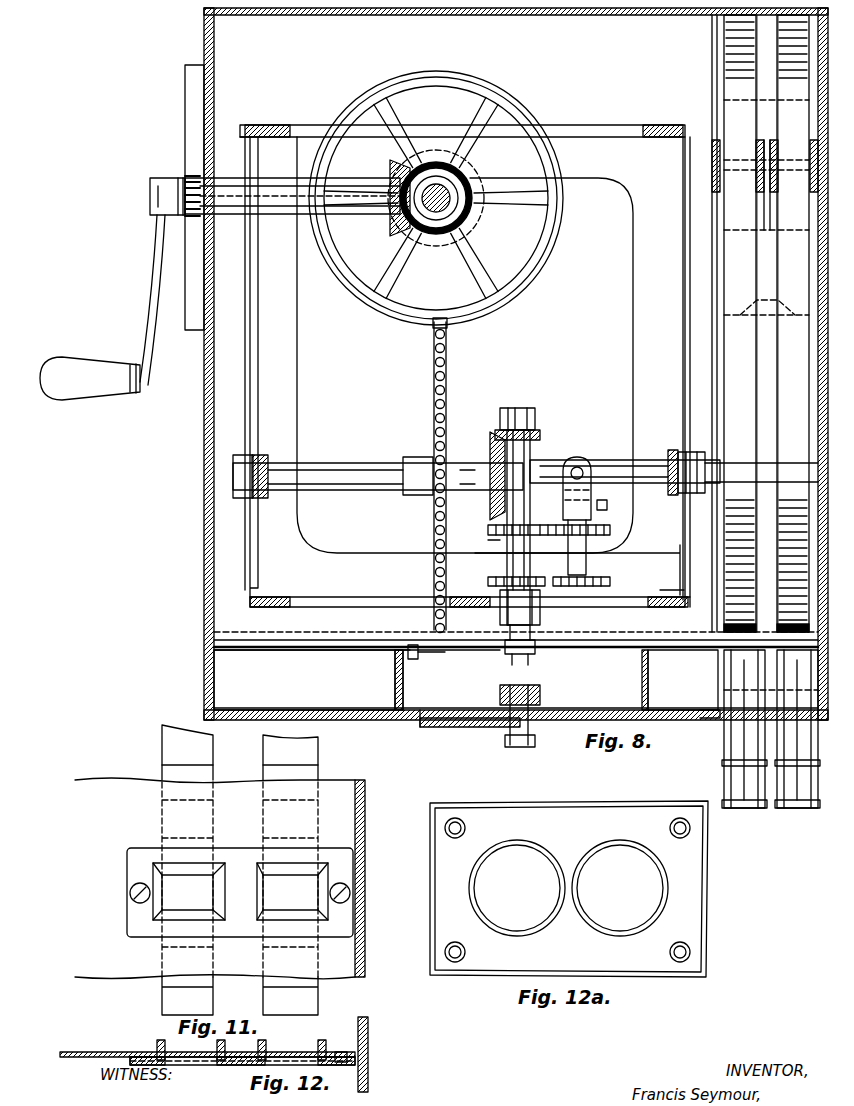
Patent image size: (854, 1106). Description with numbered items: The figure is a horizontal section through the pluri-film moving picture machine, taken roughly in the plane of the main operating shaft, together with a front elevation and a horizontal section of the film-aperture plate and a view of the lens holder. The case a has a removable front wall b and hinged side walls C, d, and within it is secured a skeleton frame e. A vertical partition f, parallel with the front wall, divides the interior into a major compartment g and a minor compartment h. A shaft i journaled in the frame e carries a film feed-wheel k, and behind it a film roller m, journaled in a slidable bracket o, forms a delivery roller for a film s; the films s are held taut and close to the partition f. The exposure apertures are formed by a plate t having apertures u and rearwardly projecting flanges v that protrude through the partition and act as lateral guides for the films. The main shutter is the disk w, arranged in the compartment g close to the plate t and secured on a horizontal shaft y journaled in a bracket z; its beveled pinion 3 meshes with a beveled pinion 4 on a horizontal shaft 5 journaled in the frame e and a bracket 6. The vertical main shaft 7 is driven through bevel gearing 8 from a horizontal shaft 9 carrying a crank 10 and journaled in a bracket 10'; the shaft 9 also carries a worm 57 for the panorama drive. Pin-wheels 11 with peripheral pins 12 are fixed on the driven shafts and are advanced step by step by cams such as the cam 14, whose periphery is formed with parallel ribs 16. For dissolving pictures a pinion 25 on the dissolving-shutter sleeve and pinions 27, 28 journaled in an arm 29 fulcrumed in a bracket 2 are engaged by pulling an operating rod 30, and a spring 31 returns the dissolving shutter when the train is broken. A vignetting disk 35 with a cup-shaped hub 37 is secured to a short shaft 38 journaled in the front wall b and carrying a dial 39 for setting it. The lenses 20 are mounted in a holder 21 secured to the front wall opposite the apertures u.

In FIG. 8, the case a is at (205, 688).
In FIG. 11, the case a is at (365, 832).
In FIG. 12, the case a is at (368, 1040).
In FIG. 8, the removable front wall b is at (360, 712).
In FIG. 8, the hinged side wall C is at (205, 487).
In FIG. 8, the skeleton frame e is at (290, 380).
In FIG. 8, the minor compartment h is at (465, 345).
In FIG. 8, the horizontal shaft 9 is at (152, 197).
In FIG. 8, the worm 57 is at (186, 222).
In FIG. 8, the crank 10 is at (102, 307).
In FIG. 8, the bracket 10' is at (292, 216).
In FIG. 8, the bevel gearing 8 is at (403, 170).
In FIG. 8, the cam 14 is at (378, 310).
In FIG. 8, the vertical shaft (main shaft) 7 is at (458, 190).
In FIG. 8, the pin-wheel 11 is at (447, 388).
In FIG. 8, the peripheral pin 12 is at (434, 418).
In FIG. 8, the horizontal shaft 5 is at (355, 472).
In FIG. 8, the bracket 6 is at (433, 526).
In FIG. 8, the beveled pinion 3 is at (532, 434).
In FIG. 8, the beveled pinion 4 is at (490, 437).
In FIG. 8, the rib 16 is at (538, 522).
In FIG. 8, the horizontal shaft y is at (484, 540).
In FIG. 8, the pinion 25 is at (506, 572).
In FIG. 8, the pinion 27 is at (611, 580).
In FIG. 8, the arm 29 is at (563, 500).
In FIG. 8, the pinion 28 is at (603, 512).
In FIG. 8, the operating rod 30 is at (640, 553).
In FIG. 8, the bracket z is at (541, 620).
In FIG. 8, the bracket 2 is at (600, 460).
In FIG. 8, the shaft i is at (645, 456).
In FIG. 8, the hinged side wall d is at (818, 407).
In FIG. 8, the bracket o is at (763, 195).
In FIG. 8, the film roller (delivery roller) m is at (775, 232).
In FIG. 8, the film feed-wheel k is at (767, 299).
In FIG. 8, the film s is at (766, 321).
In FIG. 11, the film s is at (262, 995).
In FIG. 8, the flange v is at (772, 628).
In FIG. 12, the flange v is at (326, 1048).
In FIG. 8, the vertical partition f is at (333, 634).
In FIG. 11, the vertical partition f is at (120, 978).
In FIG. 12, the vertical partition f is at (108, 1053).
In FIG. 8, the vignetting disk 35 is at (310, 650).
In FIG. 8, the major compartment g is at (304, 680).
In FIG. 8, the cup-shaped hub 37 is at (395, 680).
In FIG. 8, the spring 31 is at (416, 660).
In FIG. 8, the dial 39 is at (455, 727).
In FIG. 8, the short shaft 38 is at (540, 697).
In FIG. 8, the disk (main shutter) w is at (690, 647).
In FIG. 8, the lens 20 is at (764, 808).
In FIG. 8, the lens holder 21 is at (718, 720).
In FIG. 12A, the lens holder 21 is at (569, 889).
In FIG. 11, the plate t is at (240, 892).
In FIG. 12, the plate t is at (236, 1066).
In FIG. 11, the aperture u is at (240, 891).